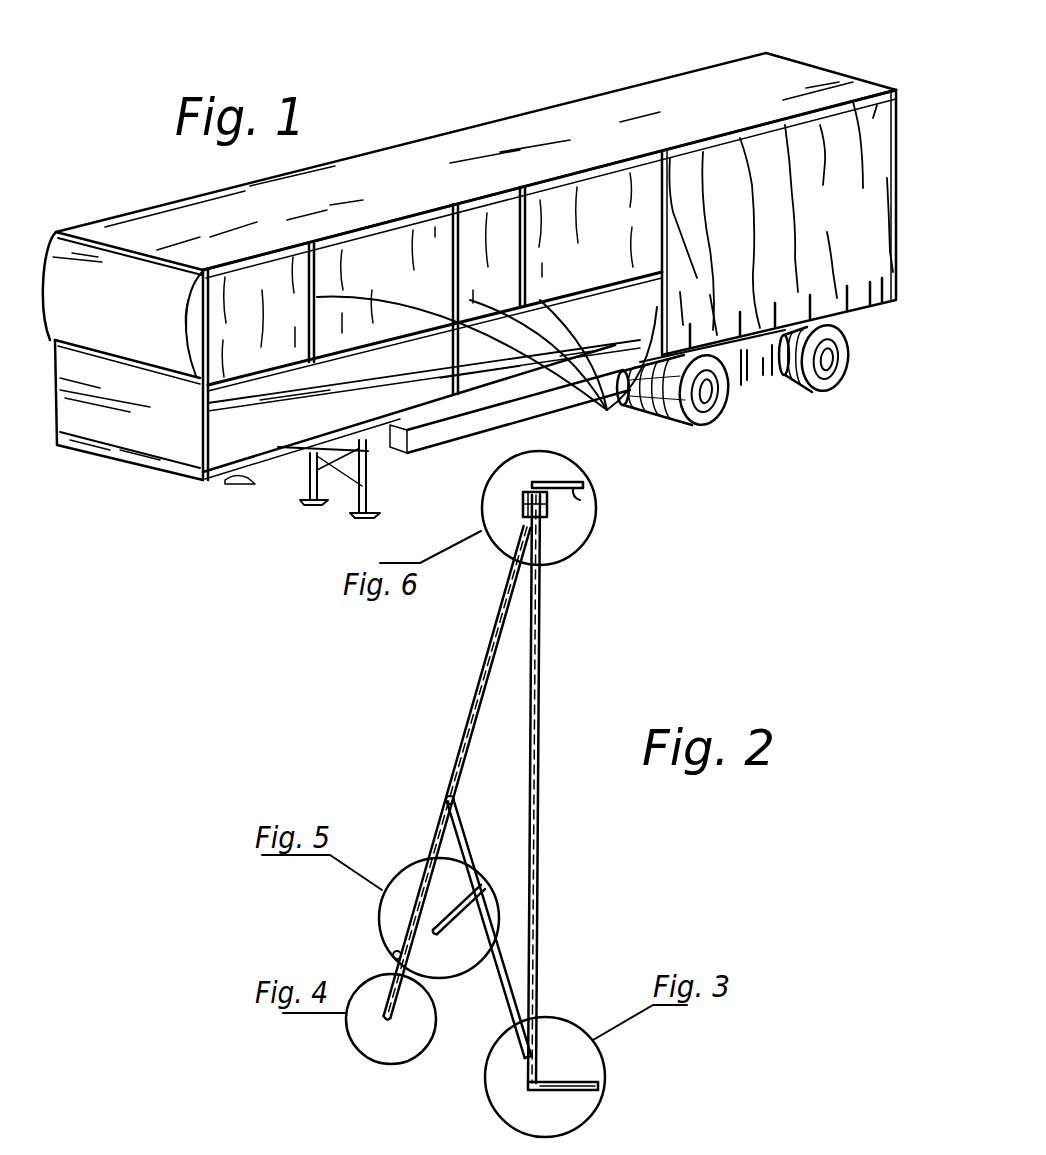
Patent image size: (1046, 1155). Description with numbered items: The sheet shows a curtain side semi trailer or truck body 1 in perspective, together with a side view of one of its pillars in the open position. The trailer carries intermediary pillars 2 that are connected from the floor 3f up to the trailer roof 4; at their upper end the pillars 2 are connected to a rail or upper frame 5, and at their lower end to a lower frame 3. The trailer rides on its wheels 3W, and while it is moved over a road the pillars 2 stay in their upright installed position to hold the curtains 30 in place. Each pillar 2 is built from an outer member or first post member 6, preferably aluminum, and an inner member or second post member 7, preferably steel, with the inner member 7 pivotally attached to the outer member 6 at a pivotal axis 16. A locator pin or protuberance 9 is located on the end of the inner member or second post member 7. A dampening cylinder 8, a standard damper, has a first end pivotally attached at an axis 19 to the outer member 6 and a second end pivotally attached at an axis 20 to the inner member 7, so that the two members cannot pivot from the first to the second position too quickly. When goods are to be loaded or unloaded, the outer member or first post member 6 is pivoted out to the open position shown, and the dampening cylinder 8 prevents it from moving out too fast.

In FIG. 1, the curtain side semi trailer or truck body 1 is at (463, 80).
In FIG. 1, the intermediary pillar 2 is at (439, 314).
In FIG. 1, the lower frame 3 is at (284, 445).
In FIG. 1, the floor 3f is at (258, 416).
In FIG. 2, the floor 3f is at (580, 1085).
In FIG. 1, the trailer wheels 3W is at (835, 382).
In FIG. 1, the trailer roof 4 is at (686, 87).
In FIG. 2, the trailer roof 4 is at (573, 490).
In FIG. 1, the rail or upper frame 5 is at (577, 173).
In FIG. 2, the rail or upper frame 5 is at (547, 507).
In FIG. 2, the outer member or first post member 6 is at (470, 707).
In FIG. 2, the inner member or second post member 7 is at (502, 955).
In FIG. 2, the dampening cylinder 8 is at (443, 930).
In FIG. 2, the locator pin or protuberance 9 is at (527, 1060).
In FIG. 2, the pivotal axis 16 is at (447, 808).
In FIG. 2, the axis 19 is at (397, 955).
In FIG. 2, the axis 20 is at (483, 887).
In FIG. 1, the curtains 30 is at (871, 132).